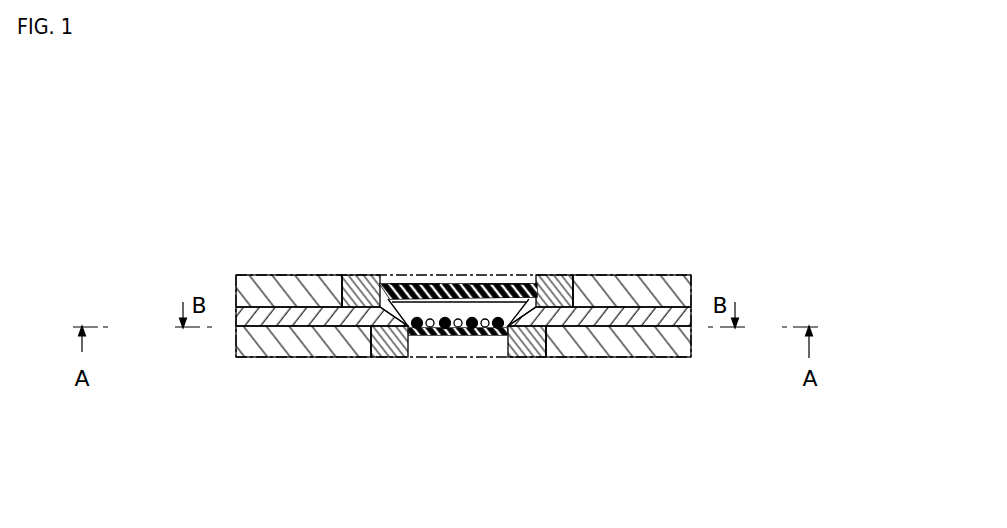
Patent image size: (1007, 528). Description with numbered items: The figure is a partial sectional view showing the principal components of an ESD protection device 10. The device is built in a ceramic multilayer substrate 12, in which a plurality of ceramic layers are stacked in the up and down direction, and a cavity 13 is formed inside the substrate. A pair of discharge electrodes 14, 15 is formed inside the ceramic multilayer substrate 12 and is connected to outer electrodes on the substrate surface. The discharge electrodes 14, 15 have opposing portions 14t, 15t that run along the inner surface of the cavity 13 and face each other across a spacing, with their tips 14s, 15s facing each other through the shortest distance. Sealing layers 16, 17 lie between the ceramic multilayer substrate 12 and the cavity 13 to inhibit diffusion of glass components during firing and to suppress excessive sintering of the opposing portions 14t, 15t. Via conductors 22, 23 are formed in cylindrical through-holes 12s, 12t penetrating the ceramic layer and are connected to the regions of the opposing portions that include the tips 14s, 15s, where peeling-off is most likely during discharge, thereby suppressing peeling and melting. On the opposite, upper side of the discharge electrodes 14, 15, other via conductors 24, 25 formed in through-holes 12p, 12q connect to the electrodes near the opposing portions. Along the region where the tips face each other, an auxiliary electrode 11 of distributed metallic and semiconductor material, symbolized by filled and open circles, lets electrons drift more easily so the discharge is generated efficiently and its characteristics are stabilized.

The ESD protection device 10 is at (754, 150).
The auxiliary electrode 11 is at (466, 336).
The ceramic multilayer substrate 12 is at (666, 315).
The cylindrical through-hole 12p is at (341, 300).
The cylindrical through-hole 12q is at (569, 300).
The cylindrical through-hole 12s is at (369, 338).
The cylindrical through-hole 12t is at (546, 340).
The cavity 13 is at (466, 302).
The discharge electrode 14 is at (276, 305).
The tip 14s is at (420, 284).
The opposing portion 14t is at (385, 284).
The discharge electrode 15 is at (640, 305).
The tip 15s is at (498, 284).
The opposing portion 15t is at (528, 290).
The sealing layer 16 is at (454, 328).
The sealing layer 17 is at (446, 290).
The via conductor 22 is at (398, 335).
The via conductor 23 is at (520, 340).
The other via conductor 24 is at (371, 290).
The other via conductor 25 is at (553, 295).